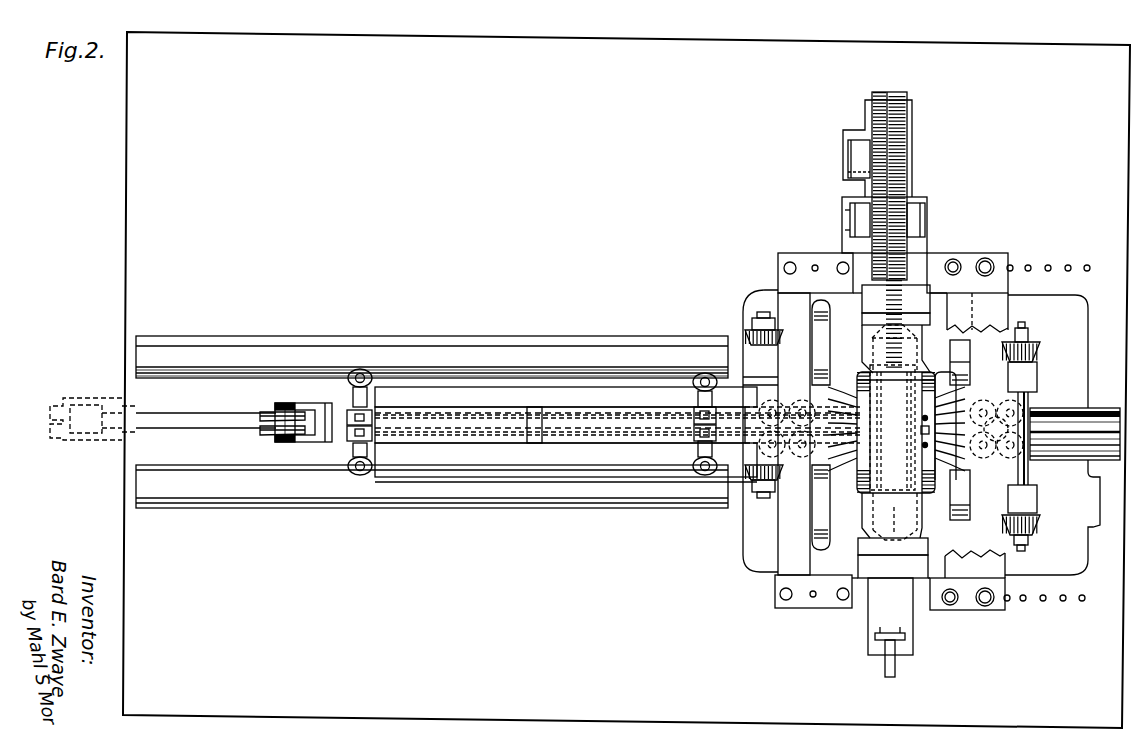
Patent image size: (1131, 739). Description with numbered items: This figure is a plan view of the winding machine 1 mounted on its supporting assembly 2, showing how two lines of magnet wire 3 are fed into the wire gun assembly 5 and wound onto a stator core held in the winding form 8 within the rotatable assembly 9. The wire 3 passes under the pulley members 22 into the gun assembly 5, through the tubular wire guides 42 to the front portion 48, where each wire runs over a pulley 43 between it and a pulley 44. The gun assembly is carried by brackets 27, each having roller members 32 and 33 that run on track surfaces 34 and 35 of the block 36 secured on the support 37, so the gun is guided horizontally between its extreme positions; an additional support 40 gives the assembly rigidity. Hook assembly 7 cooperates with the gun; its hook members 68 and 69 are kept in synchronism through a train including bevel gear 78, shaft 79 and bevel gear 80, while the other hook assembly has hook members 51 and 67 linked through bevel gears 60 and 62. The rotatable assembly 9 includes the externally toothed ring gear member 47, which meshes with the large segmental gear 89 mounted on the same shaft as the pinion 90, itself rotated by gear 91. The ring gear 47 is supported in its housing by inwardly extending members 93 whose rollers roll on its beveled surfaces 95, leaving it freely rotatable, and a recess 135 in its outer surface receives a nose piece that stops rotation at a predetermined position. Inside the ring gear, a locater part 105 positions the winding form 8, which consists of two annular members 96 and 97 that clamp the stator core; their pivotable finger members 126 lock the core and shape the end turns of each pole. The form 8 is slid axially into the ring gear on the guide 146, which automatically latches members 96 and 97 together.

The winding machine 1 is at (110, 293).
The supporting assembly 2 is at (134, 540).
The magnet wire 3 is at (230, 417).
The wire gun assembly 5 is at (468, 407).
The hook assembly 7 is at (998, 557).
The winding form 8 is at (867, 494).
The rotatable assembly 9 is at (883, 523).
The pulley members 22 is at (50, 408).
The brackets 27 is at (352, 430).
The roller member 32 is at (376, 389).
The roller member 33 is at (692, 389).
The track surface 34 is at (278, 372).
The track surface 35 is at (172, 470).
The block 36 is at (180, 355).
The support 37 is at (238, 338).
The additional support 40 is at (543, 442).
The tubular wire guides 42 is at (508, 419).
The pulleys 43 is at (983, 400).
The pulleys 44 is at (1034, 416).
The ring gear member 47 is at (871, 334).
The front portion 48 is at (790, 400).
The hook member 51 is at (826, 325).
The bevel gear 60 is at (752, 332).
The bevel gear 62 is at (748, 483).
The hook member 67 is at (824, 520).
The hook member 68 is at (960, 512).
The hook member 69 is at (958, 342).
The bevel gear 78 is at (1040, 526).
The shaft 79 is at (1028, 477).
The bevel gear 80 is at (1040, 350).
The segmental gear 89 is at (902, 158).
The pinion 90 is at (850, 218).
The gear 91 is at (873, 112).
The inwardly extending members 93 is at (922, 300).
The beveled surfaces 95 is at (860, 541).
The annular member 96 is at (858, 377).
The annular member 97 is at (927, 381).
The locater part 105 is at (930, 447).
The finger members 126 is at (829, 440).
The recess 135 is at (895, 516).
The guide 146 is at (1110, 452).